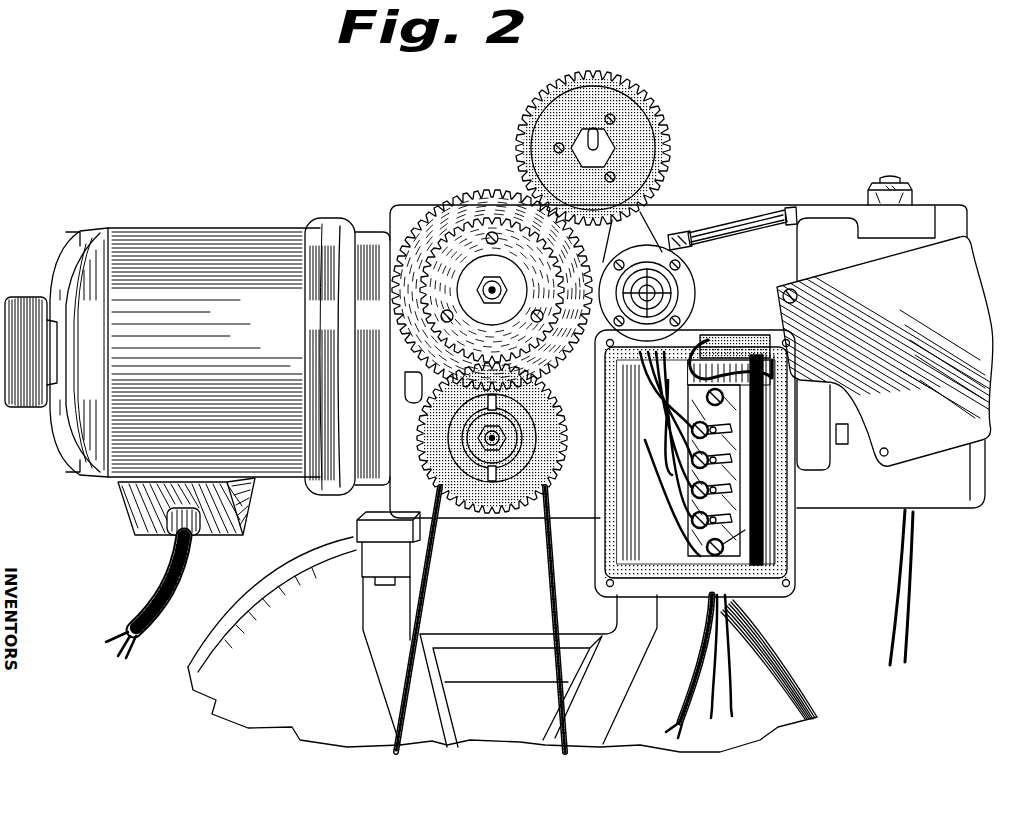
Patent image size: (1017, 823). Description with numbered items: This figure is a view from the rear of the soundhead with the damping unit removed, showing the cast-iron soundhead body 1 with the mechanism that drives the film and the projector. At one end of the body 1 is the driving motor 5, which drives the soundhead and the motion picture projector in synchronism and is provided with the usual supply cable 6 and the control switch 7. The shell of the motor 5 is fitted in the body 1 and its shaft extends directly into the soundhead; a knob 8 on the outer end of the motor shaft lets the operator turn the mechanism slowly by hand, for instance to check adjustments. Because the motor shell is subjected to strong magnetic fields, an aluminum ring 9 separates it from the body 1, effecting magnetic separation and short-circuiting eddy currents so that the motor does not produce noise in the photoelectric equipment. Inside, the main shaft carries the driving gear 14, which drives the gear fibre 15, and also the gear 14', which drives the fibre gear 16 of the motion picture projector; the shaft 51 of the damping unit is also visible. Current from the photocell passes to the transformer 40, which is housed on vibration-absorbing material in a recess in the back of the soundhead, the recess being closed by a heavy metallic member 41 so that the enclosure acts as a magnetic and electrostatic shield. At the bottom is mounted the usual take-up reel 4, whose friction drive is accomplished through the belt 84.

The soundhead body 1 is at (785, 208).
The take-up reel 4 is at (782, 661).
The driving motor 5 is at (206, 231).
The supply cable 6 is at (178, 589).
The control switch 7 is at (246, 517).
The knob 8 is at (26, 302).
The aluminum ring 9 is at (338, 223).
The driving gear 14 is at (492, 278).
The gear 14' is at (492, 249).
The gear fibre 15 is at (430, 473).
The fibre gear 16 is at (665, 138).
The transformer 40 is at (770, 525).
The heavy metallic member 41 is at (972, 292).
The shaft 51 is at (661, 300).
The belt 84 is at (549, 571).